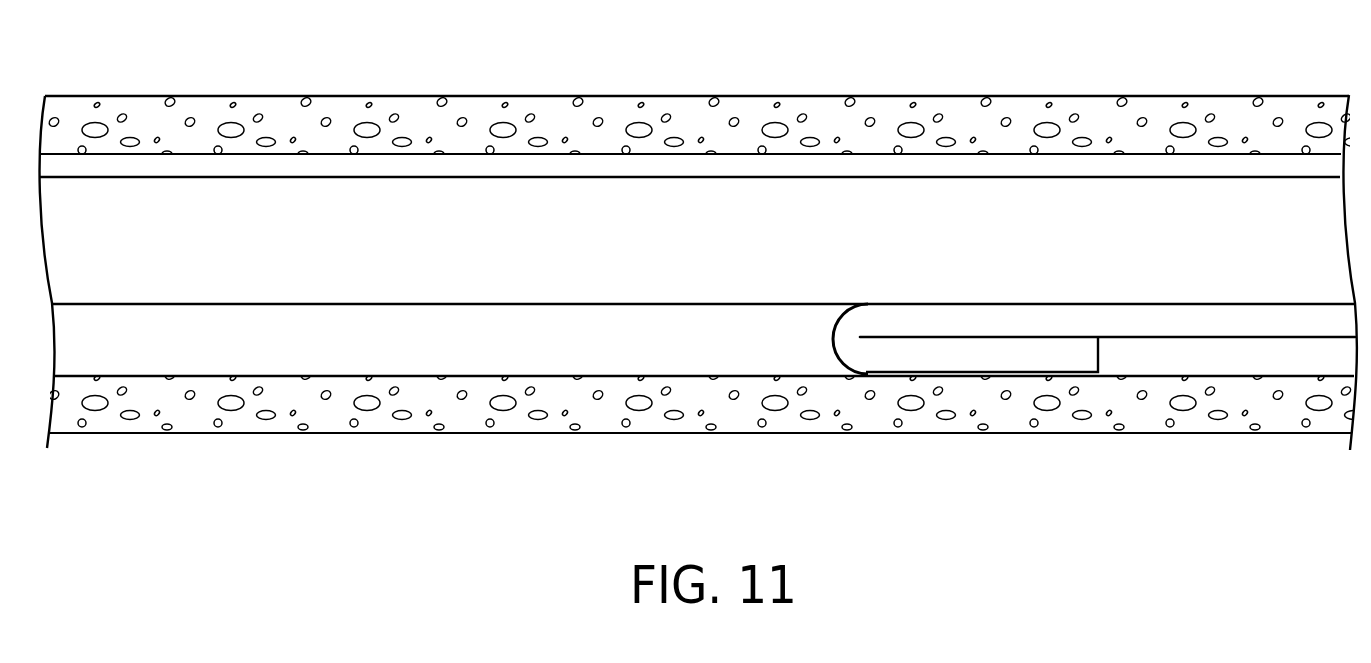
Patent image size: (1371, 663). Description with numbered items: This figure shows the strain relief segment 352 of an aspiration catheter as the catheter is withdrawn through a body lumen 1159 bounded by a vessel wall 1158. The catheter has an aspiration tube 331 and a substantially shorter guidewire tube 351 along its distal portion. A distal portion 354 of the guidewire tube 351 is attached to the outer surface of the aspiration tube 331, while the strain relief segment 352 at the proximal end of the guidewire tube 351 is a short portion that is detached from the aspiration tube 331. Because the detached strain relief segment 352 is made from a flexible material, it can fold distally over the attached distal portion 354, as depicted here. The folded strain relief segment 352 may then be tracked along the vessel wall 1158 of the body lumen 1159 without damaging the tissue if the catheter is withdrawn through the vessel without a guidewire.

The aspiration tube 331 is at (300, 207).
The vessel wall 1158 is at (567, 132).
The body lumen 1159 is at (237, 350).
The guidewire tube 351 is at (835, 356).
The strain relief segment 352 is at (977, 360).
The distal portion 354 is at (1233, 313).